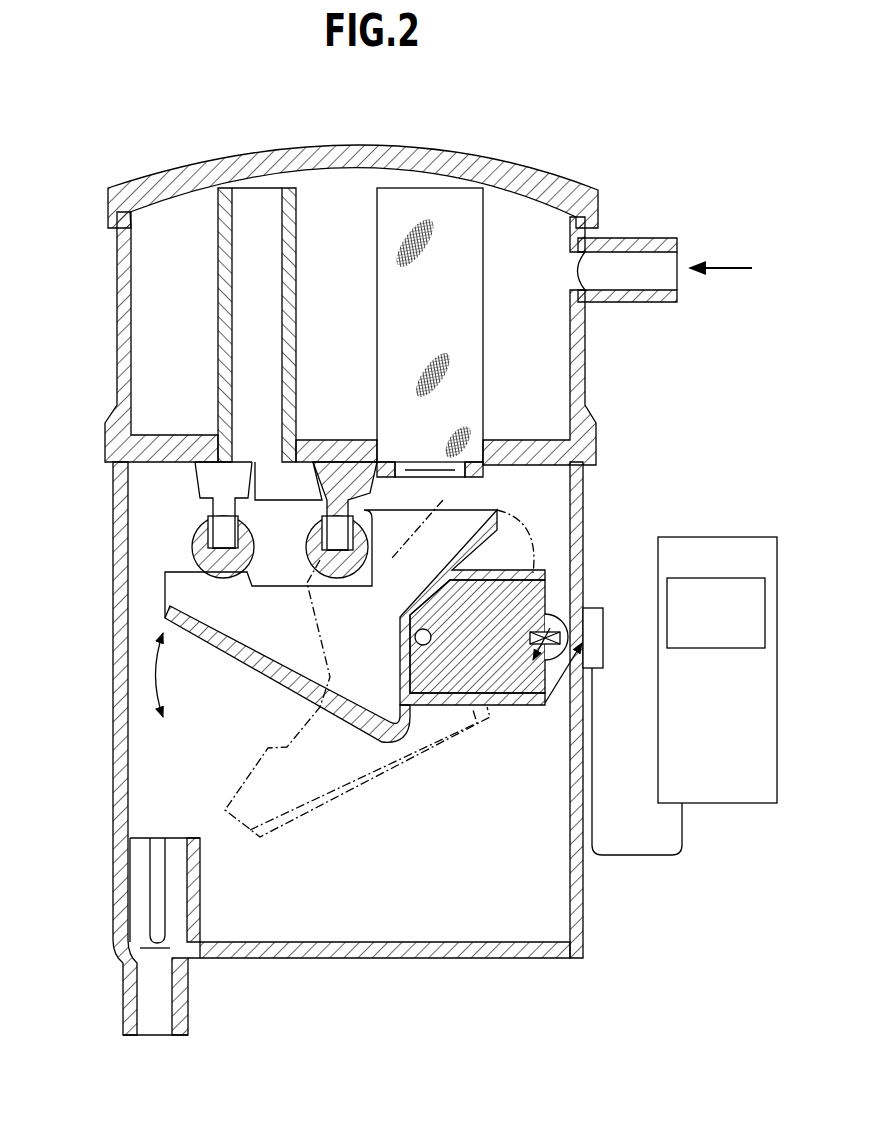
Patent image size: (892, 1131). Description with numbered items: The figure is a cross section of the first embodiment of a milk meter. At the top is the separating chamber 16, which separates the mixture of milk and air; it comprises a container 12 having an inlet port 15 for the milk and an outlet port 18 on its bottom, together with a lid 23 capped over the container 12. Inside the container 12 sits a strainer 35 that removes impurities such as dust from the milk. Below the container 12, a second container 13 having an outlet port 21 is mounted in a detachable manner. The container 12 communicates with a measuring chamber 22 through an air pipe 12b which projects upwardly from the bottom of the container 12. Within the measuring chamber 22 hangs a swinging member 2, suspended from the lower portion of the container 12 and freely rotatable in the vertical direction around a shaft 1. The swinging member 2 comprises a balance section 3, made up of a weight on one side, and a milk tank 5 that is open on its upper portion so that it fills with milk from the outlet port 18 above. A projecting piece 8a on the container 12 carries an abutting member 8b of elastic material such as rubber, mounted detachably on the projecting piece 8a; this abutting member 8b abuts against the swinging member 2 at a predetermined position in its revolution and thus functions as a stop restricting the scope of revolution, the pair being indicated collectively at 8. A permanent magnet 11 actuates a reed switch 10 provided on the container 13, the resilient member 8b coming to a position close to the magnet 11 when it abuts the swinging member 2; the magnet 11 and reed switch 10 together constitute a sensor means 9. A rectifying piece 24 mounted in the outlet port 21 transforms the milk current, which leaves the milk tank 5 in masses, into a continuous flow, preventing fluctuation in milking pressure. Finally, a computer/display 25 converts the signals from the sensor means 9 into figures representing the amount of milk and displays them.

The shaft 1 is at (414, 643).
The swinging member 2 is at (318, 714).
The balance section 3 is at (510, 705).
The milk tank 5 is at (238, 655).
The ball joints 8 is at (300, 533).
The projecting piece 8a is at (198, 487).
The abutting member 8b is at (197, 545).
The sensor means 9 is at (556, 678).
The reed switch 10 is at (598, 612).
The permanent magnet 11 is at (550, 603).
The container 12 is at (588, 375).
The air pipe 12b is at (222, 327).
The container 13 is at (430, 960).
The inlet port 15 is at (668, 262).
The separating chamber 16 is at (506, 348).
The outlet port 18 is at (430, 466).
The outlet port 21 is at (168, 1021).
The measuring chamber 22 is at (428, 866).
The lid 23 is at (521, 167).
The rectifying piece 24 is at (200, 905).
The computer/display 25 is at (750, 545).
The strainer 35 is at (378, 328).